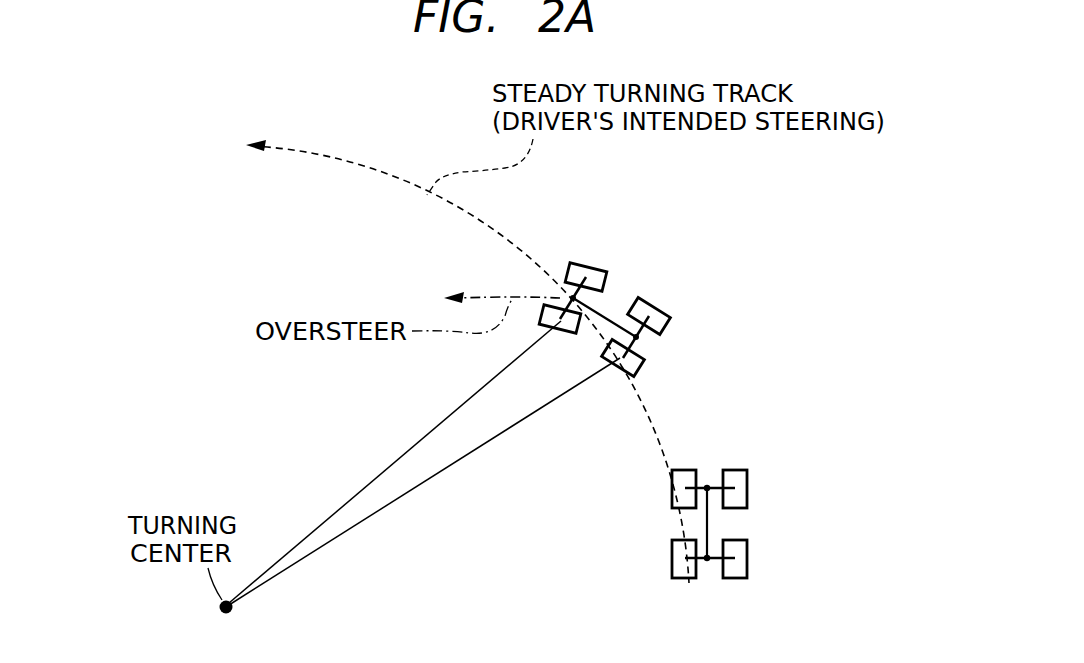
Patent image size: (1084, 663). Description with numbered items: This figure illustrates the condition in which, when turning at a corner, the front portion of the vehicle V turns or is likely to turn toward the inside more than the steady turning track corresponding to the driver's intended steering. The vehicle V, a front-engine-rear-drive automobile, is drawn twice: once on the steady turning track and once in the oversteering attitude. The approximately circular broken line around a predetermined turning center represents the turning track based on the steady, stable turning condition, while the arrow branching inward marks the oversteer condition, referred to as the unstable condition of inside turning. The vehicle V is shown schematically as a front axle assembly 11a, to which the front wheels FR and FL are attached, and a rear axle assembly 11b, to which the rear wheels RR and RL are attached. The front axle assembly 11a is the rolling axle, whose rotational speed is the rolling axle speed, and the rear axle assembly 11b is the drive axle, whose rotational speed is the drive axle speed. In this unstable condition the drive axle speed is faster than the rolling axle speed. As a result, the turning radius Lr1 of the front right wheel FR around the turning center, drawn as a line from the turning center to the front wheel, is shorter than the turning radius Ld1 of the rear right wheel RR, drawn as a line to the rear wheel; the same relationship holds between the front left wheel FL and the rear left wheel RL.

The vehicle V is at (621, 275).
The front axle assembly 11a is at (574, 297).
The rear axle assembly 11b is at (638, 338).
The front right wheel FR is at (572, 268).
The front left wheel FL is at (562, 331).
The rear right wheel RR is at (667, 313).
The rear left wheel RL is at (647, 364).
The turning radius of the front right wheel Lr1 is at (413, 448).
The turning radius of the rear right wheel Ld1 is at (433, 480).